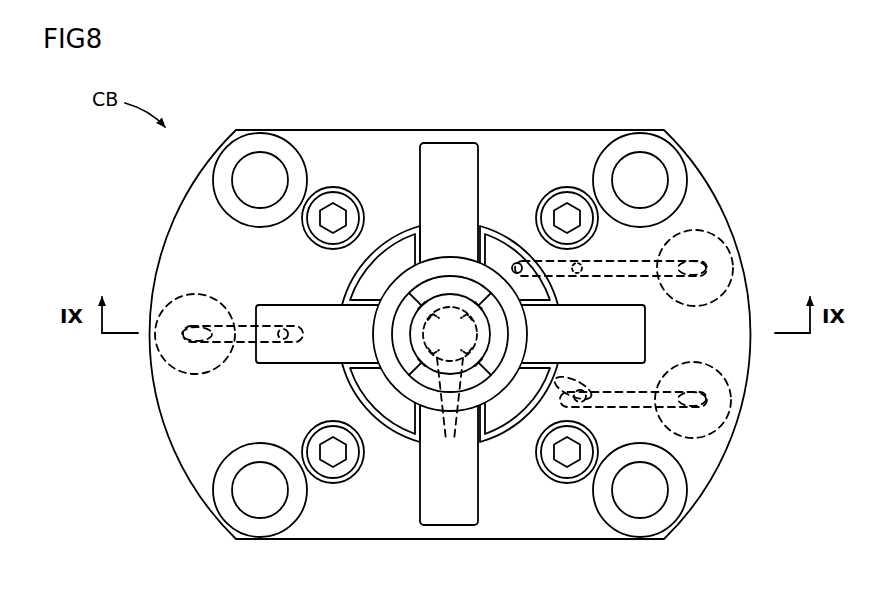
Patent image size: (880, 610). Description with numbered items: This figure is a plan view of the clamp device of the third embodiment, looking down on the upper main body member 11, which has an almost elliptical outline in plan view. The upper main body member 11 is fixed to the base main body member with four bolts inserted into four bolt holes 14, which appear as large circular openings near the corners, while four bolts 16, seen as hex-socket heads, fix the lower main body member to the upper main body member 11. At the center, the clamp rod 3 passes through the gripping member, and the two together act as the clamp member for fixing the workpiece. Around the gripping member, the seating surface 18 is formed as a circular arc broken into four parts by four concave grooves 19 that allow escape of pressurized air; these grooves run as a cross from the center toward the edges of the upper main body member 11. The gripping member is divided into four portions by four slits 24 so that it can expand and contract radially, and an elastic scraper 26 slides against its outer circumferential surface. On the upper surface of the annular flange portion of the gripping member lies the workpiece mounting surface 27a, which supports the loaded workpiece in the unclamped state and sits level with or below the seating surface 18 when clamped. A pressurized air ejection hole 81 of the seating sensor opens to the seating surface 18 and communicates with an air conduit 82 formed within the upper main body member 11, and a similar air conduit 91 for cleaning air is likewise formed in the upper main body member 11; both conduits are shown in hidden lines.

The clamp rod 3 is at (446, 292).
The upper main body member 11 is at (721, 467).
The bolt holes 14 is at (243, 470).
The bolts 16 is at (339, 483).
The seating surface 18 is at (376, 394).
The concave grooves 19 is at (465, 207).
The slits 24 is at (449, 414).
The scraper 26 is at (383, 330).
The workpiece mounting surface 27a is at (402, 312).
The pressurized air ejection hole 81 is at (517, 263).
The air conduit 82 is at (601, 262).
The air conduit 91 is at (639, 410).